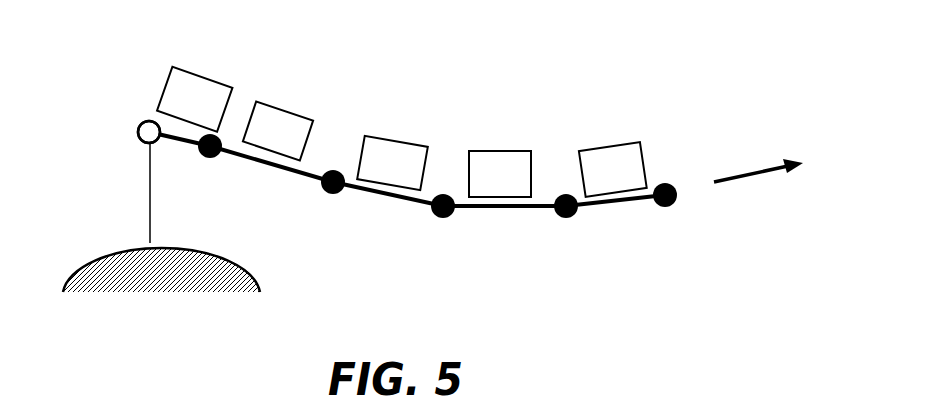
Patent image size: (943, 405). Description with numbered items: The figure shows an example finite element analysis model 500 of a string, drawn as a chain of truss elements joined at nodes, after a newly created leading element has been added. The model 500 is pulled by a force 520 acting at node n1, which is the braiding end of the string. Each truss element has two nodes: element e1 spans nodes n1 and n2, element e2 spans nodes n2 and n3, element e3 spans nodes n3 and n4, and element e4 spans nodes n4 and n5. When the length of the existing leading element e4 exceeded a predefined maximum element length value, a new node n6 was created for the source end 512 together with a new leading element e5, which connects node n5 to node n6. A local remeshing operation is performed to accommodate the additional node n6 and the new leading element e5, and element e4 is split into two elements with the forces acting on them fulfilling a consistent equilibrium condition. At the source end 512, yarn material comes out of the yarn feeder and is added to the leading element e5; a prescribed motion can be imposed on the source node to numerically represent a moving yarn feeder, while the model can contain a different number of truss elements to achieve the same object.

The FEA model 500 is at (493, 91).
The source end 512 is at (138, 125).
The force 520 is at (760, 139).
The node n1 is at (661, 212).
The node n2 is at (556, 223).
The node n3 is at (439, 223).
The node n4 is at (329, 198).
The node n5 is at (206, 163).
The node n6 is at (132, 146).
The truss element e1 is at (613, 169).
The truss element e2 is at (500, 174).
The truss element e3 is at (392, 163).
The truss element e4 is at (278, 131).
The leading element e5 is at (194, 99).